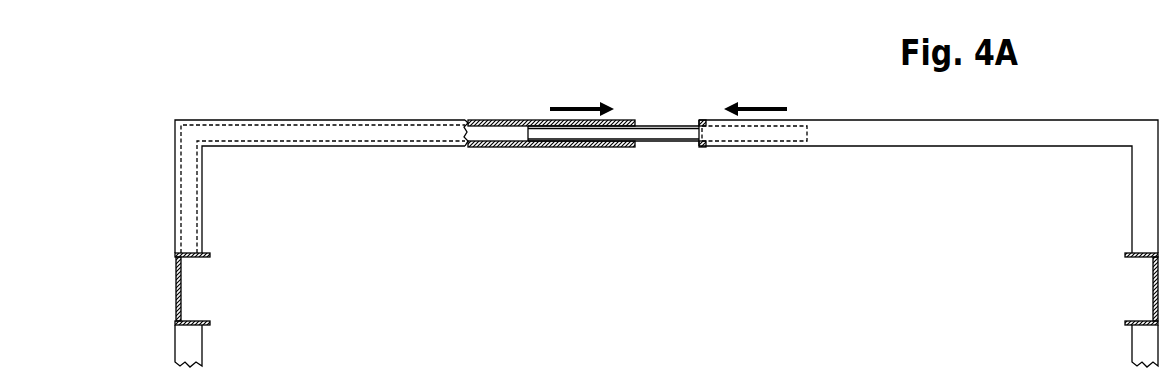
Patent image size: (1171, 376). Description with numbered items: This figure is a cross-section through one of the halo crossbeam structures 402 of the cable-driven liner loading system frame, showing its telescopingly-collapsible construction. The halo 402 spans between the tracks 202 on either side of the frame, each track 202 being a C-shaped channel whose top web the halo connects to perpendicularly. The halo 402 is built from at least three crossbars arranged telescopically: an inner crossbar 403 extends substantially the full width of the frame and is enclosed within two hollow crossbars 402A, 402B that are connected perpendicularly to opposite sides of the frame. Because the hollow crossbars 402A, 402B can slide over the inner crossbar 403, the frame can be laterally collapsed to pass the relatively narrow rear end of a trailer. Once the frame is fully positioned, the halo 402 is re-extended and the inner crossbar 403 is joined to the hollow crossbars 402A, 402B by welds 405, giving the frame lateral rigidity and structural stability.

The halo crossbeam structure 402 is at (290, 97).
The hollow crossbar 402A is at (502, 148).
The hollow crossbar 402B is at (918, 148).
The inner crossbar 403 is at (661, 148).
The weld 405 is at (640, 120).
The track 202 is at (180, 293).